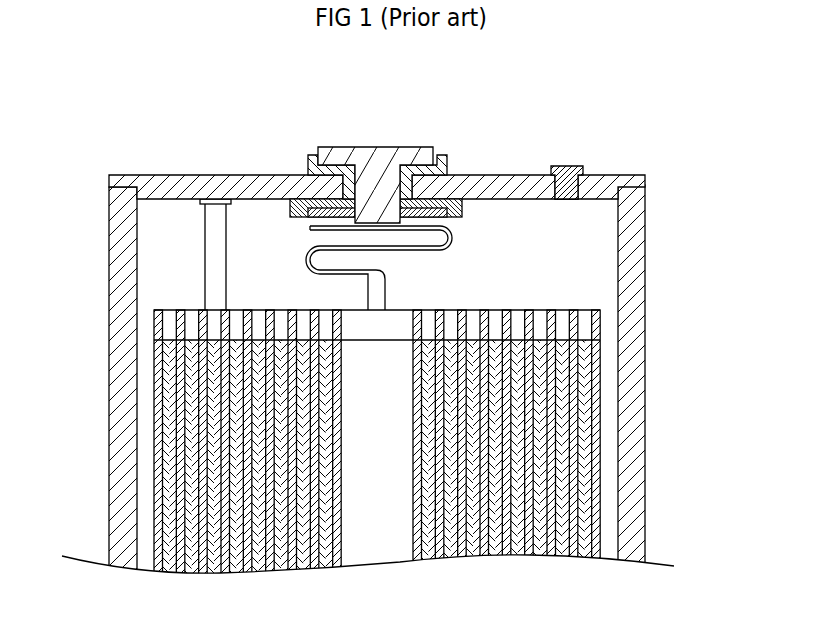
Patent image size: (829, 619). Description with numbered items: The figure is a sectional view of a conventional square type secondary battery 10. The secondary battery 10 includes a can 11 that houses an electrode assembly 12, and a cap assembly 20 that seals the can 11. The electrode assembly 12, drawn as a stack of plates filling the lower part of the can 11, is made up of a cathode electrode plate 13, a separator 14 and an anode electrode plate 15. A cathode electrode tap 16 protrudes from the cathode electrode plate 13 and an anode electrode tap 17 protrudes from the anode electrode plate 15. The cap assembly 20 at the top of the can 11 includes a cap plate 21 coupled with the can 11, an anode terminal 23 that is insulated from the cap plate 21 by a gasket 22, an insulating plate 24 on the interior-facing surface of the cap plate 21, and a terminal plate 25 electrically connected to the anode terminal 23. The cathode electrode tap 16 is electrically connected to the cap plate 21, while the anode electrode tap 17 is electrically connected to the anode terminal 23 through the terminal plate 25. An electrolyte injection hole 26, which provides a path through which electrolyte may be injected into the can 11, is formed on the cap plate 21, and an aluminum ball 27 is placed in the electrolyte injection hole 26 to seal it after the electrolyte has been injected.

The secondary battery 10 is at (670, 202).
The can 11 is at (635, 333).
The electrode assembly 12 is at (713, 418).
The cathode electrode plate 13 is at (595, 422).
The separator 14 is at (578, 453).
The anode electrode plate 15 is at (563, 488).
The cathode electrode tap 16 is at (210, 243).
The anode electrode tap 17 is at (300, 262).
The cap assembly 20 is at (192, 115).
The cap plate 21 is at (180, 175).
The gasket 22 is at (443, 160).
The anode terminal 23 is at (377, 147).
The insulating plate 24 is at (289, 200).
The terminal plate 25 is at (446, 221).
The electrolyte injection hole 26 is at (541, 175).
The ball 27 is at (565, 168).